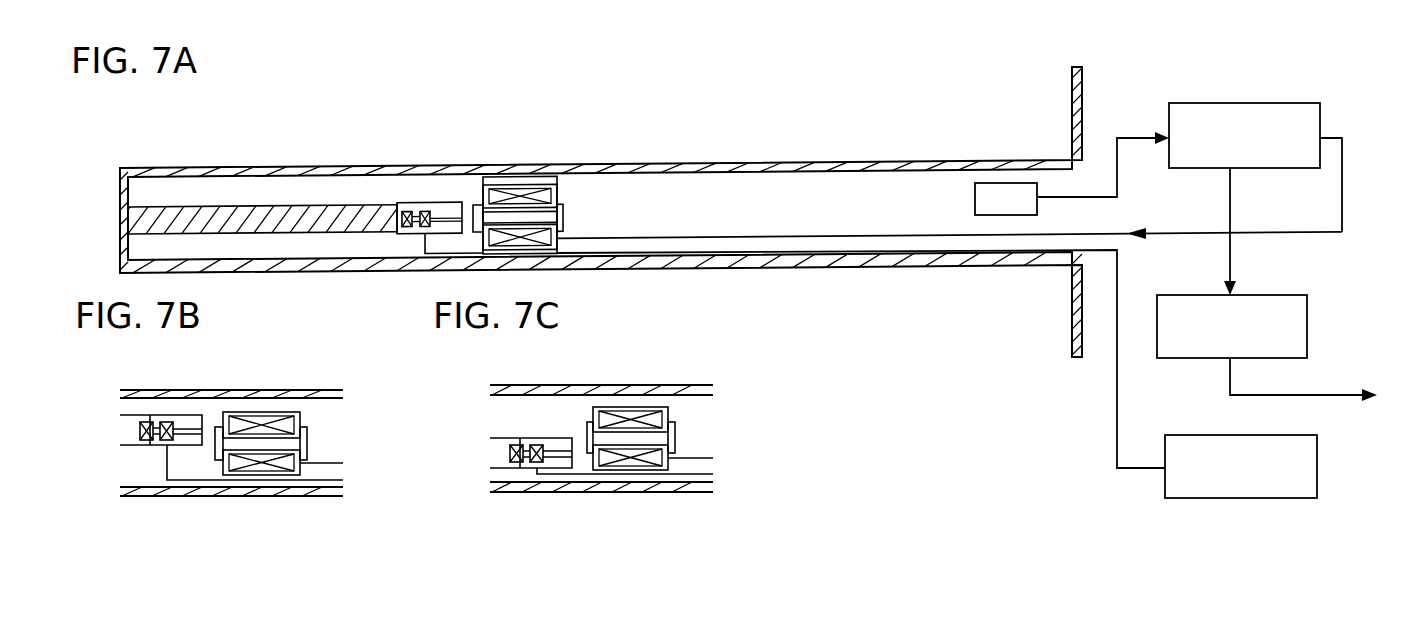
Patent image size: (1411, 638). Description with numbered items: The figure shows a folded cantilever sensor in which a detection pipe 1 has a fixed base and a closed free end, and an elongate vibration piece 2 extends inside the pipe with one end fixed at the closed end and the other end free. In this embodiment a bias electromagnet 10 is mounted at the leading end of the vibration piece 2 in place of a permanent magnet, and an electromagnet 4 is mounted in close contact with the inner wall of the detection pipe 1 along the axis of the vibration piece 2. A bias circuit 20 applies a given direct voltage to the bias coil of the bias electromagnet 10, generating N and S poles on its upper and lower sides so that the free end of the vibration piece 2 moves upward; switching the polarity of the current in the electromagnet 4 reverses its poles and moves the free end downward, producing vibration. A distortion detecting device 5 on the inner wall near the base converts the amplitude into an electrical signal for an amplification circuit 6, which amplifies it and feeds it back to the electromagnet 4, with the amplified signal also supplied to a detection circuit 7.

In FIG. 7A, the detection pipe 1 is at (653, 168).
In FIG. 7B, the detection pipe 1 is at (231, 443).
In FIG. 7C, the detection pipe 1 is at (601, 438).
In FIG. 7A, the vibration piece 2 is at (265, 207).
In FIG. 7A, the electromagnet 4 is at (522, 188).
In FIG. 7B, the electromagnet 4 is at (277, 412).
In FIG. 7C, the electromagnet 4 is at (648, 407).
In FIG. 7A, the distortion detecting device 5 is at (997, 183).
In FIG. 7A, the amplification circuit 6 is at (1250, 103).
In FIG. 7A, the detection circuit 7 is at (1307, 311).
In FIG. 7A, the bias electromagnet 10 is at (430, 205).
In FIG. 7B, the bias electromagnet 10 is at (177, 412).
In FIG. 7C, the bias electromagnet 10 is at (562, 474).
In FIG. 7A, the bias circuit 20 is at (1317, 478).